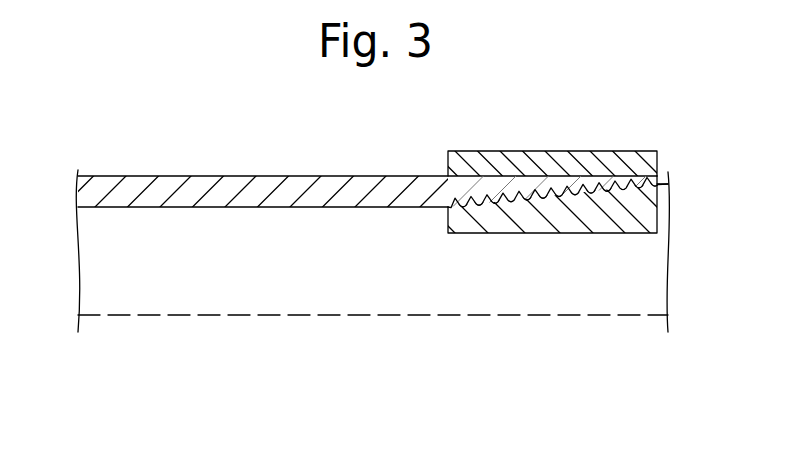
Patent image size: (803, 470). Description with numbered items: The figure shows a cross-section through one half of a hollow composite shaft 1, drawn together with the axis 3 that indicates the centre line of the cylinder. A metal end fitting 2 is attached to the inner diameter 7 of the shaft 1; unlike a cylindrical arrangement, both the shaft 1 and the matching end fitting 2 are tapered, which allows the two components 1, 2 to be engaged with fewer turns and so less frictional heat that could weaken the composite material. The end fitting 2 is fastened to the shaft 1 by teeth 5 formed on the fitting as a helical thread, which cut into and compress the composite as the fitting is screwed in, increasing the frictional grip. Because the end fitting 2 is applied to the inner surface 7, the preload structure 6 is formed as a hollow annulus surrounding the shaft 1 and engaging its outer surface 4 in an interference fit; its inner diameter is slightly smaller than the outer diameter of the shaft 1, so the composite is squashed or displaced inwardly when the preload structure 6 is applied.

The composite shaft 1 is at (371, 235).
The end fitting 2 is at (546, 229).
The axis 3 is at (412, 316).
The outer surface 4 is at (275, 176).
The teeth 5 is at (563, 233).
The preload structure 6 is at (528, 162).
The inner diameter 7 is at (333, 207).